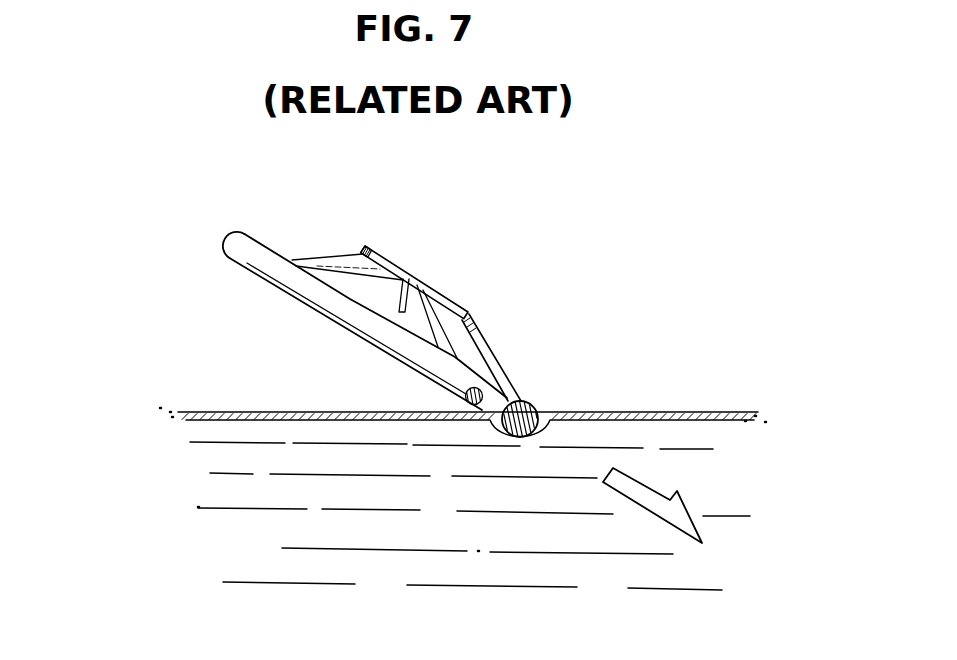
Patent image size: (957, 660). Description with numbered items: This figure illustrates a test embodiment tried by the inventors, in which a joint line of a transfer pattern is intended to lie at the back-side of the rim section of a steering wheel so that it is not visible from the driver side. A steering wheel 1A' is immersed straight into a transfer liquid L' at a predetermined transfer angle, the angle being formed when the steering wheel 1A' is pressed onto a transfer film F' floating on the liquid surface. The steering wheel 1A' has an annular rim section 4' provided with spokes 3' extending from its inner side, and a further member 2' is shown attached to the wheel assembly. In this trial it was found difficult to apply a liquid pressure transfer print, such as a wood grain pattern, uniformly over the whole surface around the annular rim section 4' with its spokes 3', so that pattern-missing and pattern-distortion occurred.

The steering wheel 1A' is at (347, 321).
The bar 2' is at (420, 276).
The spokes 3' is at (438, 286).
The annular rim section 4' is at (558, 398).
The transfer film F' is at (463, 395).
The liquid L' is at (470, 516).